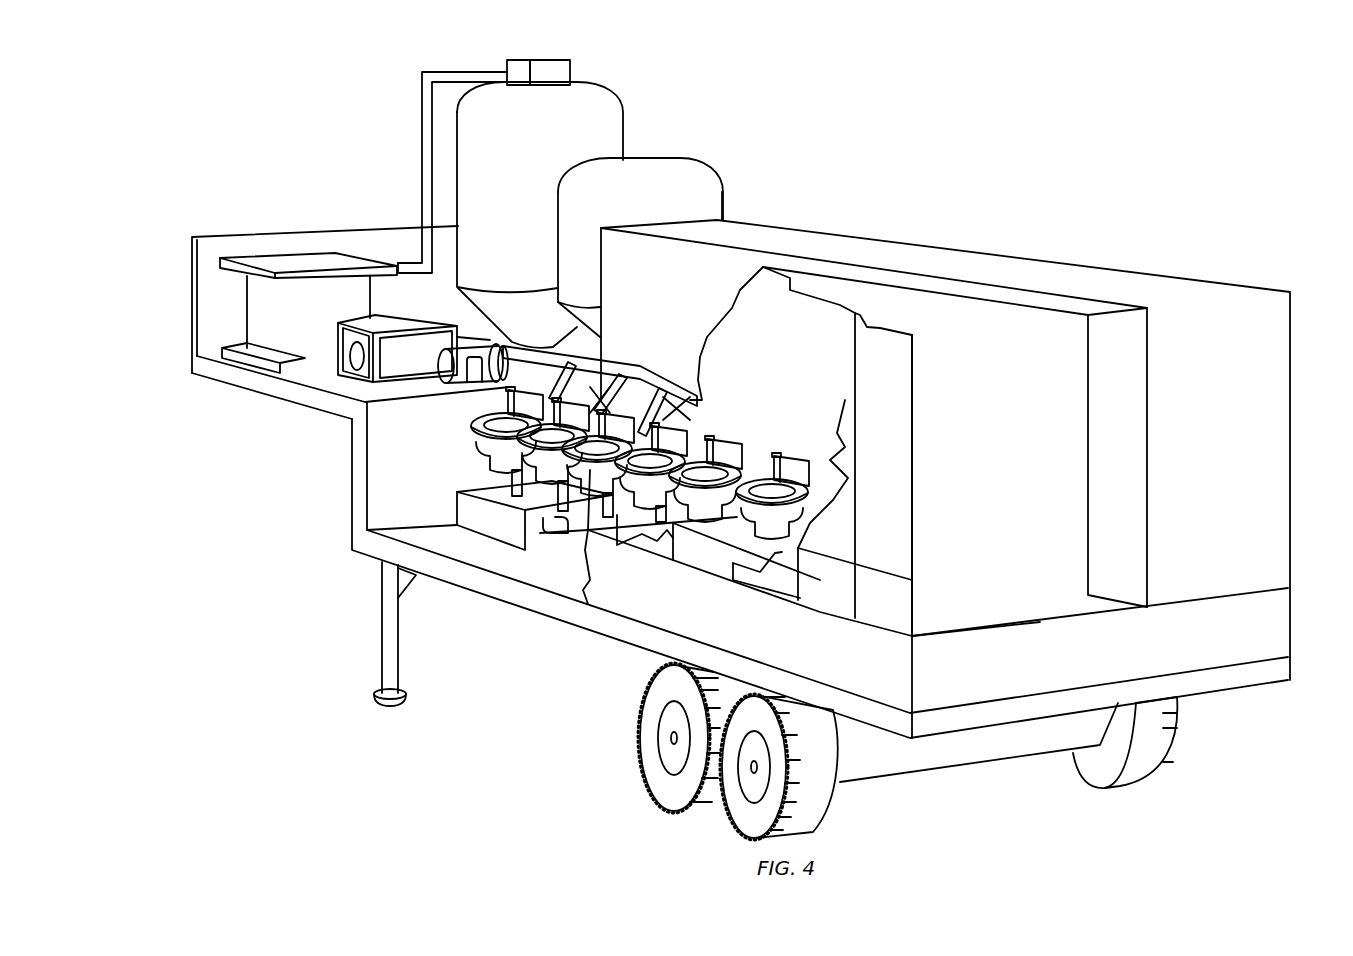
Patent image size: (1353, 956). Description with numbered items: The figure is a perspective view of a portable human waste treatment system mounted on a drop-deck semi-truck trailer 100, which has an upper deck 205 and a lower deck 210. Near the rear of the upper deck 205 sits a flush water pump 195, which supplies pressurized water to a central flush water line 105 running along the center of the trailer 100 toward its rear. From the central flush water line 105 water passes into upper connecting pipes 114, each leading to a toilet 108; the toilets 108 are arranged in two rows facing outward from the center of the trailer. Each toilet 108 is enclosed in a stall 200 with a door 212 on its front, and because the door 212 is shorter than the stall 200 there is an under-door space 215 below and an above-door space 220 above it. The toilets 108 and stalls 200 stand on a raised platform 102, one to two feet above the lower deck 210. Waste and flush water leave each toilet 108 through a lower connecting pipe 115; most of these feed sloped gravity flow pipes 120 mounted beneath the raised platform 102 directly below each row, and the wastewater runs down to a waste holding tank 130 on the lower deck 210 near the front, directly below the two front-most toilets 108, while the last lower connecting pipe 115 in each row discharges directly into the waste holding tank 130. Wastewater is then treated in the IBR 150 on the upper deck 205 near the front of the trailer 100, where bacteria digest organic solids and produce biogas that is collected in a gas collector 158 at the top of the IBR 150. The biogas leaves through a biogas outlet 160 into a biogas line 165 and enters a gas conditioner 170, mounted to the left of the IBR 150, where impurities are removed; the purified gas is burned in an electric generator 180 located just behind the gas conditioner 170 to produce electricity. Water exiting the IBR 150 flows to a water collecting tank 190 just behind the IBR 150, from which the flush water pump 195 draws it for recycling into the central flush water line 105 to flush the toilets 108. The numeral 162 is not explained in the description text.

The drop-deck semi-truck trailer 100 is at (192, 278).
The raised platform 102 is at (700, 573).
The central flush water line 105 is at (633, 374).
The toilet 108 is at (725, 431).
The upper connecting pipe 114 is at (678, 388).
The lower connecting pipe 115 is at (505, 478).
The gravity flow pipe 120 is at (574, 533).
The waste holding tank 130 is at (491, 537).
The IBR 150 is at (595, 84).
The gas collector 158 is at (550, 88).
The biogas outlet 160 is at (512, 88).
The base plate 162 is at (233, 368).
The biogas line 165 is at (422, 134).
The gas conditioner 170 is at (273, 256).
The electric generator 180 is at (347, 323).
The water collecting tank 190 is at (662, 157).
The flush water pump 195 is at (442, 351).
The stall 200 is at (818, 580).
The upper deck 205 is at (290, 403).
The lower deck 210 is at (596, 641).
The door 212 is at (898, 440).
The under-door space 215 is at (900, 604).
The above-door space 220 is at (903, 380).